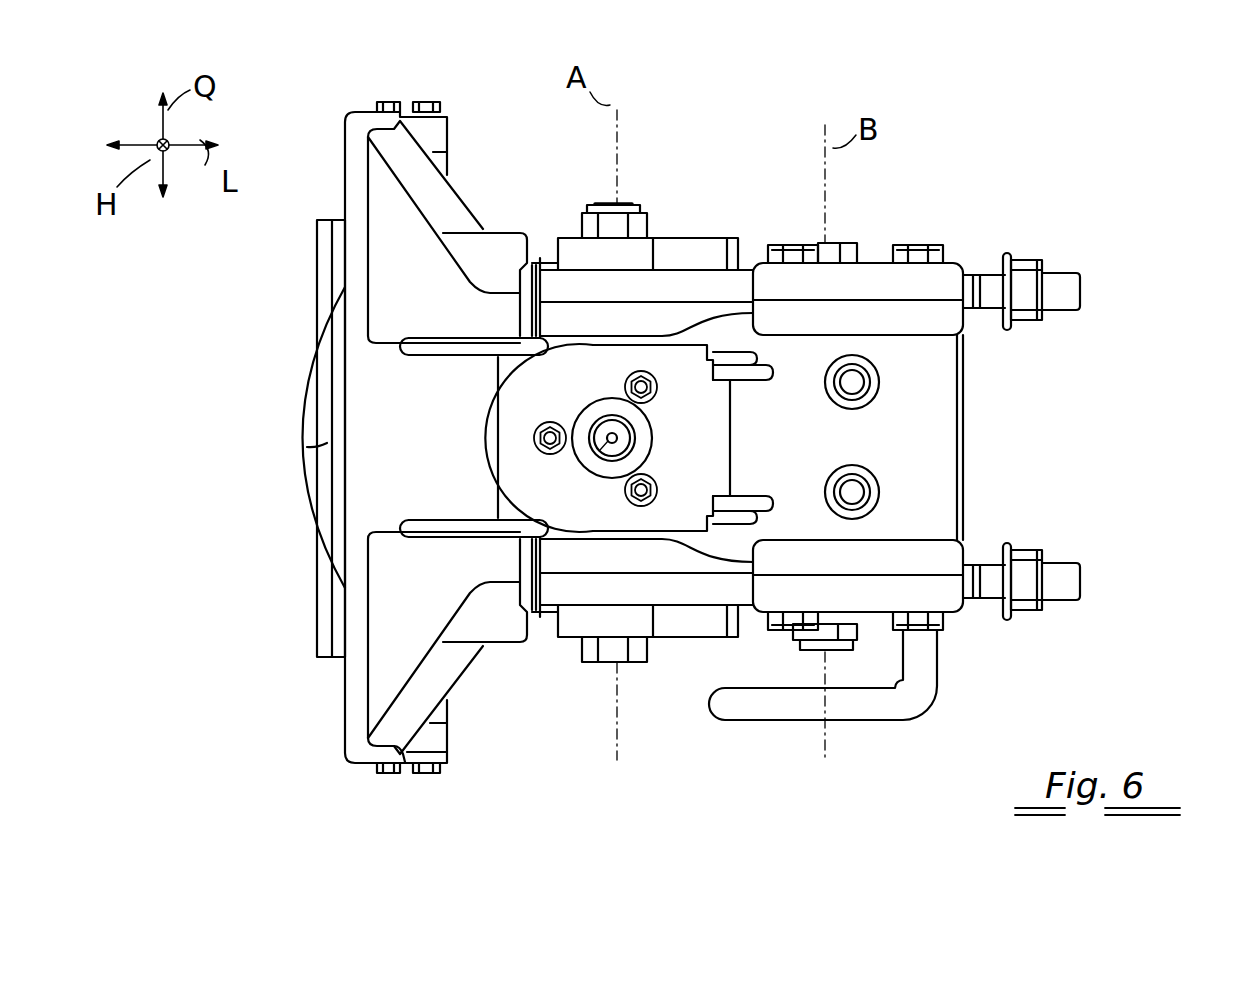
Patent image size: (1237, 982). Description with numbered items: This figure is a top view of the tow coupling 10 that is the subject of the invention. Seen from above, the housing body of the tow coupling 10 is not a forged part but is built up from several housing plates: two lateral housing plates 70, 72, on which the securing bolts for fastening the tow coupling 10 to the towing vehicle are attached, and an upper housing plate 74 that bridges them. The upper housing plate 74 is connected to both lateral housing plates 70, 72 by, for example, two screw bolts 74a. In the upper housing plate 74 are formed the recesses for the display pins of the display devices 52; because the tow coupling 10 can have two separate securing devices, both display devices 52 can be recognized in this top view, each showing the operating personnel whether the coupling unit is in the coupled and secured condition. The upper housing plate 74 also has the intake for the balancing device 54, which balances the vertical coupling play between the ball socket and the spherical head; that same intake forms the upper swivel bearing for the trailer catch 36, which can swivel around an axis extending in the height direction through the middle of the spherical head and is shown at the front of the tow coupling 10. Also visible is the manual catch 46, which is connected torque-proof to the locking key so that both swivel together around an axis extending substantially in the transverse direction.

The tow coupling 10 is at (1109, 161).
The trailer catch 36 is at (320, 445).
The manual catch 46 is at (748, 707).
The display device 52 is at (880, 376).
The balancing device 54 is at (608, 441).
The lateral housing plate 70 is at (947, 282).
The lateral housing plate 72 is at (940, 583).
The upper housing plate 74 is at (932, 435).
The screw bolt 74a is at (918, 255).